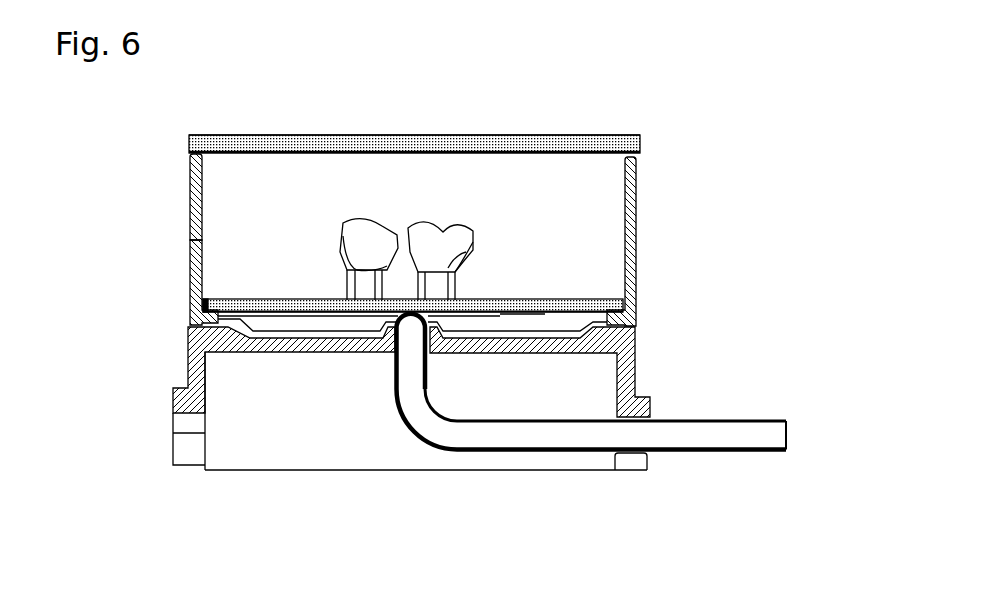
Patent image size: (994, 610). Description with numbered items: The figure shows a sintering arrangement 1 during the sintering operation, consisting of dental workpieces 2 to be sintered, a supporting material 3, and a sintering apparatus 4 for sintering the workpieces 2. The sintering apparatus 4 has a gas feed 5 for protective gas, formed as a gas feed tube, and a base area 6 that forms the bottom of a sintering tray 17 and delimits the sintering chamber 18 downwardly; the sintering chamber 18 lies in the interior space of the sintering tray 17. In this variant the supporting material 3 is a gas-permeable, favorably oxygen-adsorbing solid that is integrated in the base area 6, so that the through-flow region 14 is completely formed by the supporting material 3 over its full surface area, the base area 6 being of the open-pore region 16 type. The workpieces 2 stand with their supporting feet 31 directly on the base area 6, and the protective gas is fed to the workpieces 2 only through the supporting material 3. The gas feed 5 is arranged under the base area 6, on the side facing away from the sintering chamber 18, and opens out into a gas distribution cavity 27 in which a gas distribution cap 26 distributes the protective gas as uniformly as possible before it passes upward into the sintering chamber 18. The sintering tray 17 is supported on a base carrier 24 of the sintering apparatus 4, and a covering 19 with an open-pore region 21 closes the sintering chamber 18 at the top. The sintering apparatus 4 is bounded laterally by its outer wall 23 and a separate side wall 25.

The arrangement 1 is at (672, 126).
The dental workpiece 2 is at (365, 245).
The supporting material 3 is at (533, 308).
The sintering apparatus 4 is at (641, 271).
The gas feed 5 is at (432, 422).
The base area 6 is at (522, 302).
The through-flow region 14 is at (371, 450).
The open-pore region 16 is at (440, 305).
The sintering tray 17 is at (190, 243).
The sintering chamber 18 is at (537, 186).
The covering 19 is at (263, 143).
The open-pore region 21 is at (338, 145).
The outer wall 23 is at (124, 197).
The base carrier 24 is at (174, 401).
The side wall 25 is at (190, 184).
The gas distribution cap 26 is at (365, 322).
The gas distribution cavity 27 is at (290, 318).
The supporting feet 31 is at (379, 286).